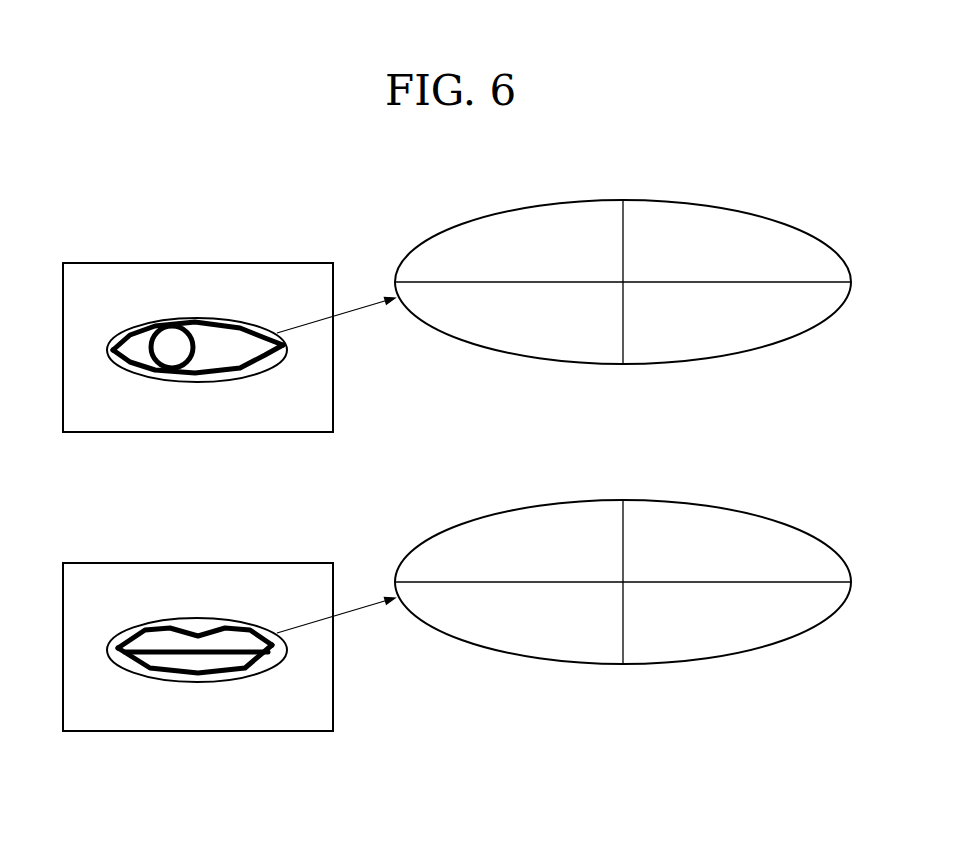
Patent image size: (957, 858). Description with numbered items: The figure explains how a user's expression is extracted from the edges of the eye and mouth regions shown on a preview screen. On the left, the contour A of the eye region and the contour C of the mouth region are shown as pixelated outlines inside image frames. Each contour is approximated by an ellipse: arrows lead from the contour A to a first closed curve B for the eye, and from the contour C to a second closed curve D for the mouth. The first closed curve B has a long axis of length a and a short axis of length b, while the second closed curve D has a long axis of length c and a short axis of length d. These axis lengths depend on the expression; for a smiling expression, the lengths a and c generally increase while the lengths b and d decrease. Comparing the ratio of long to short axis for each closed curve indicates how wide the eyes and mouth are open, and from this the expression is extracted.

The contour of the eye region A is at (198, 317).
The first closed curve B is at (623, 254).
The contour of the mouth region C is at (198, 617).
The second closed curve D is at (623, 554).
The length of the long axis of the first closed curve a is at (623, 271).
The length of the short axis of the first closed curve b is at (632, 282).
The length of the long axis of the second closed curve c is at (623, 571).
The length of the short axis of the second closed curve d is at (632, 582).